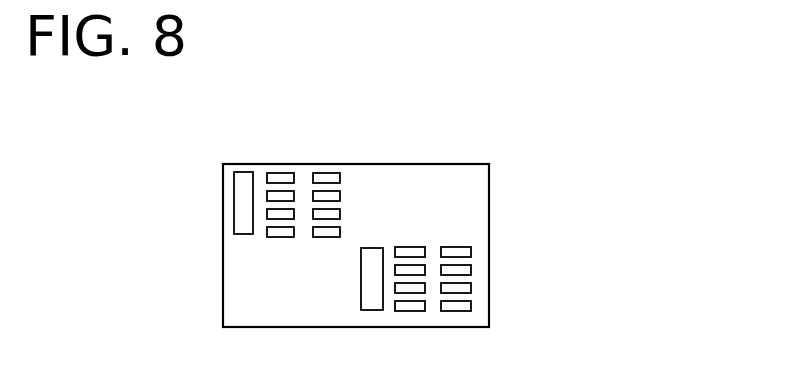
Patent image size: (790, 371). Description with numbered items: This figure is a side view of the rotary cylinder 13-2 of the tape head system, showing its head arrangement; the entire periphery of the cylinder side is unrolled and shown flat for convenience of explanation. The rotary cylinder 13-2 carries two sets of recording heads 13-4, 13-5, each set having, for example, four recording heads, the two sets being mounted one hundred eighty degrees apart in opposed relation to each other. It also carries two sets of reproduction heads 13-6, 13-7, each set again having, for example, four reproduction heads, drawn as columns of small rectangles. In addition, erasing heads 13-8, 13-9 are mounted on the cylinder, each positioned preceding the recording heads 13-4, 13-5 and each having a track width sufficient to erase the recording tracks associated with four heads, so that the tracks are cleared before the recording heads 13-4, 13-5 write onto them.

The rotary cylinder 13-2 is at (420, 165).
The recording heads 13-4 is at (285, 178).
The recording heads 13-5 is at (411, 306).
The reproduction heads 13-6 is at (326, 178).
The reproduction heads 13-7 is at (455, 308).
The erasing head 13-8 is at (248, 182).
The erasing head 13-9 is at (375, 301).